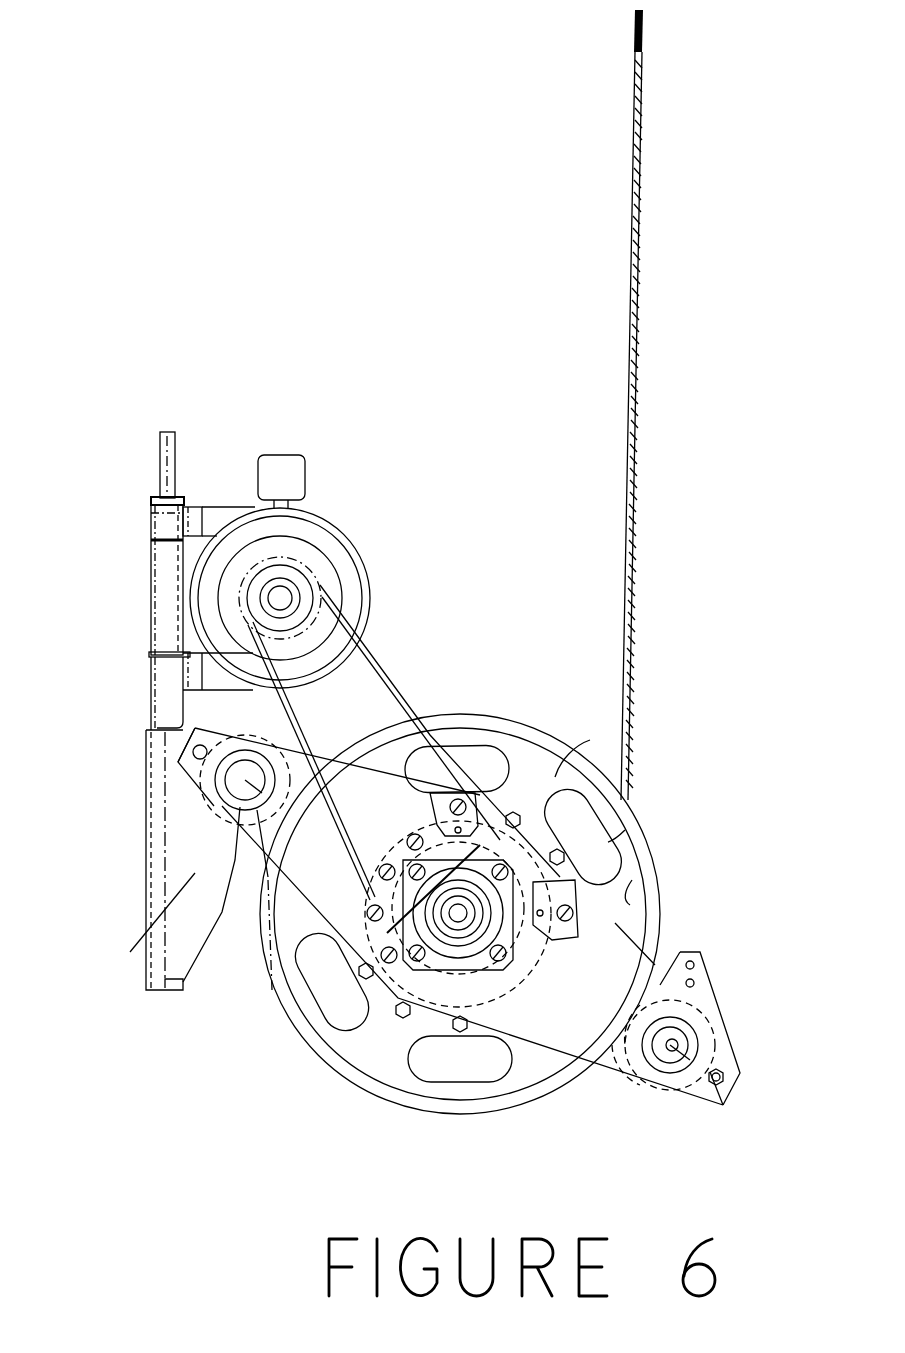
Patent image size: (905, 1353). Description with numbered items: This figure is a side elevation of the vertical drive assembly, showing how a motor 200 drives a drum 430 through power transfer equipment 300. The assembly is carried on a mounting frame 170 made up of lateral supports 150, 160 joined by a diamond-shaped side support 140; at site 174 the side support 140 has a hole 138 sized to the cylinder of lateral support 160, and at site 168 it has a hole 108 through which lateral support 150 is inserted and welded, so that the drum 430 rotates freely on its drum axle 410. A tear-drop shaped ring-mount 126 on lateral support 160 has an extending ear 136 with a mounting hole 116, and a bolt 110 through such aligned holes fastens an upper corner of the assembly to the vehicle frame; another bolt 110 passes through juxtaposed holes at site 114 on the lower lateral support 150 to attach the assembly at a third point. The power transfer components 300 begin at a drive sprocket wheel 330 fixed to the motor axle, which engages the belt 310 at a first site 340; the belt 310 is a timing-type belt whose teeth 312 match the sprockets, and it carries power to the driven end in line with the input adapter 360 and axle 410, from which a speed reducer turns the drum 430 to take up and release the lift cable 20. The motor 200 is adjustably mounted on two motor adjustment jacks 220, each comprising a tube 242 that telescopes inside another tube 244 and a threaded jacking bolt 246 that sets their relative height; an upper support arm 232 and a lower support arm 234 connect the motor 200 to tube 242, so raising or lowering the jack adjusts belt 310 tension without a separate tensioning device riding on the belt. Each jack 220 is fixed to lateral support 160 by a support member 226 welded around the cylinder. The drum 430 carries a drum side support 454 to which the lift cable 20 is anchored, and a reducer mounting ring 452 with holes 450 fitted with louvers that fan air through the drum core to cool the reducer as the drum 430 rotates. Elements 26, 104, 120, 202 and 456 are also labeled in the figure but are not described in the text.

The lift cable 20 is at (632, 628).
The mounting bracket 26 is at (705, 1005).
The pivot pin 104 is at (280, 830).
The hole 108 is at (667, 1075).
The bolt 110 is at (248, 785).
The site 114 is at (732, 1077).
The mounting hole 116 is at (205, 782).
The washer 120 is at (702, 1092).
The ring-mount 126 is at (130, 952).
The extending ear 136 is at (190, 730).
The hole 138 is at (236, 885).
The side support 140 is at (605, 1053).
The lateral support 150 is at (696, 1036).
The lateral support 160 is at (255, 712).
The site 168 is at (728, 1062).
The vertical drive assembly mounting frame 170 is at (655, 965).
The site 174 is at (290, 792).
The motor 200 is at (330, 518).
The motor terminal housing 202 is at (308, 470).
The motor adjustment jack 220 is at (151, 625).
The support member 226 is at (180, 870).
The upper support arm 232 is at (189, 508).
The lower support arm 234 is at (152, 710).
The tube 242 is at (151, 575).
The tube 244 is at (150, 776).
The threaded jacking bolt 246 is at (160, 465).
The power transfer equipment 300 is at (412, 655).
The belt 310 is at (410, 688).
The teeth 312 is at (391, 704).
The drive sprocket wheel 330 is at (335, 560).
The first site 340 is at (287, 600).
The input adapter 360 is at (458, 916).
The drum axle 410 is at (353, 995).
The drum 430 is at (663, 917).
The holes 450 is at (470, 768).
The reducer mounting ring 452 is at (555, 777).
The drum side support 454 is at (633, 900).
The spoke 456 is at (625, 831).